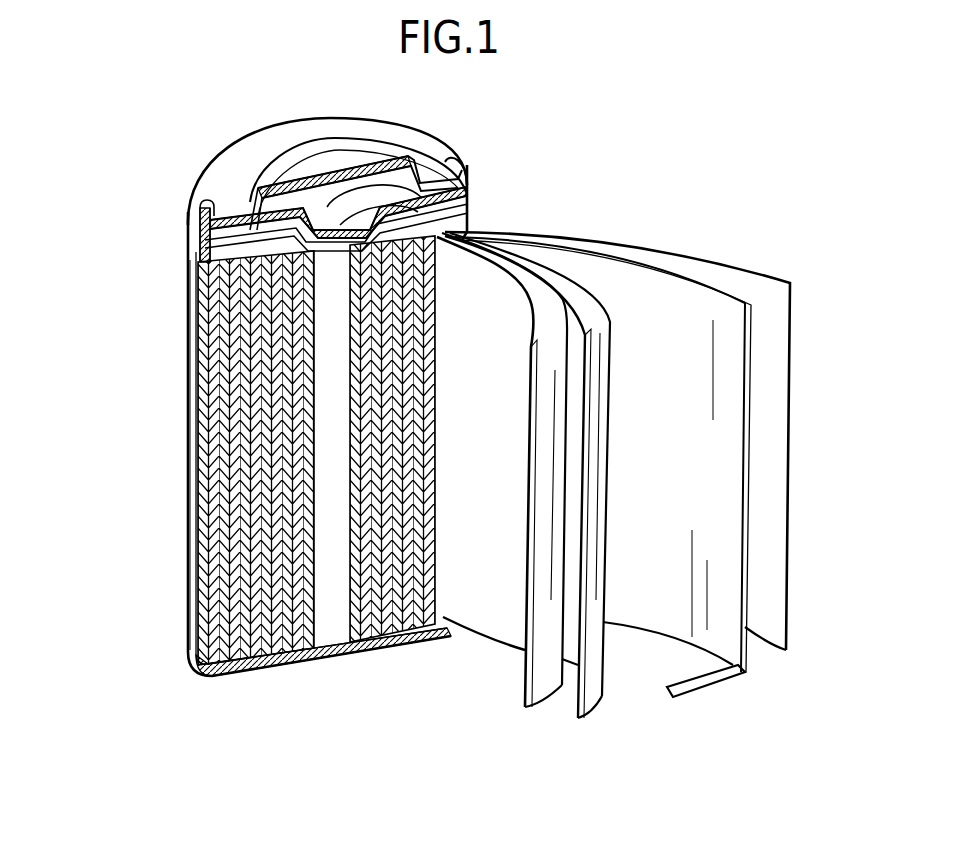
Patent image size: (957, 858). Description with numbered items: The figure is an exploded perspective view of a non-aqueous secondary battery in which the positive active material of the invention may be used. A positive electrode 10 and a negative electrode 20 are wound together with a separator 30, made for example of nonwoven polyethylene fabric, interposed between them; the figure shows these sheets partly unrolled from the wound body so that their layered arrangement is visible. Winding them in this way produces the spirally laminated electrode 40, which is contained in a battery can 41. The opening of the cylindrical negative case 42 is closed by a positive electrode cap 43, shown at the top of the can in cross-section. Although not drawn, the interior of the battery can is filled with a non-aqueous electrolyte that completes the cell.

The positive electrode 10 is at (494, 600).
The negative electrode 20 is at (682, 602).
The separator 30 is at (577, 272).
The spirally laminated electrode 40 is at (322, 603).
The battery can 41 is at (173, 310).
The cylindrical negative case 42 is at (184, 585).
The positive electrode cap 43 is at (383, 160).